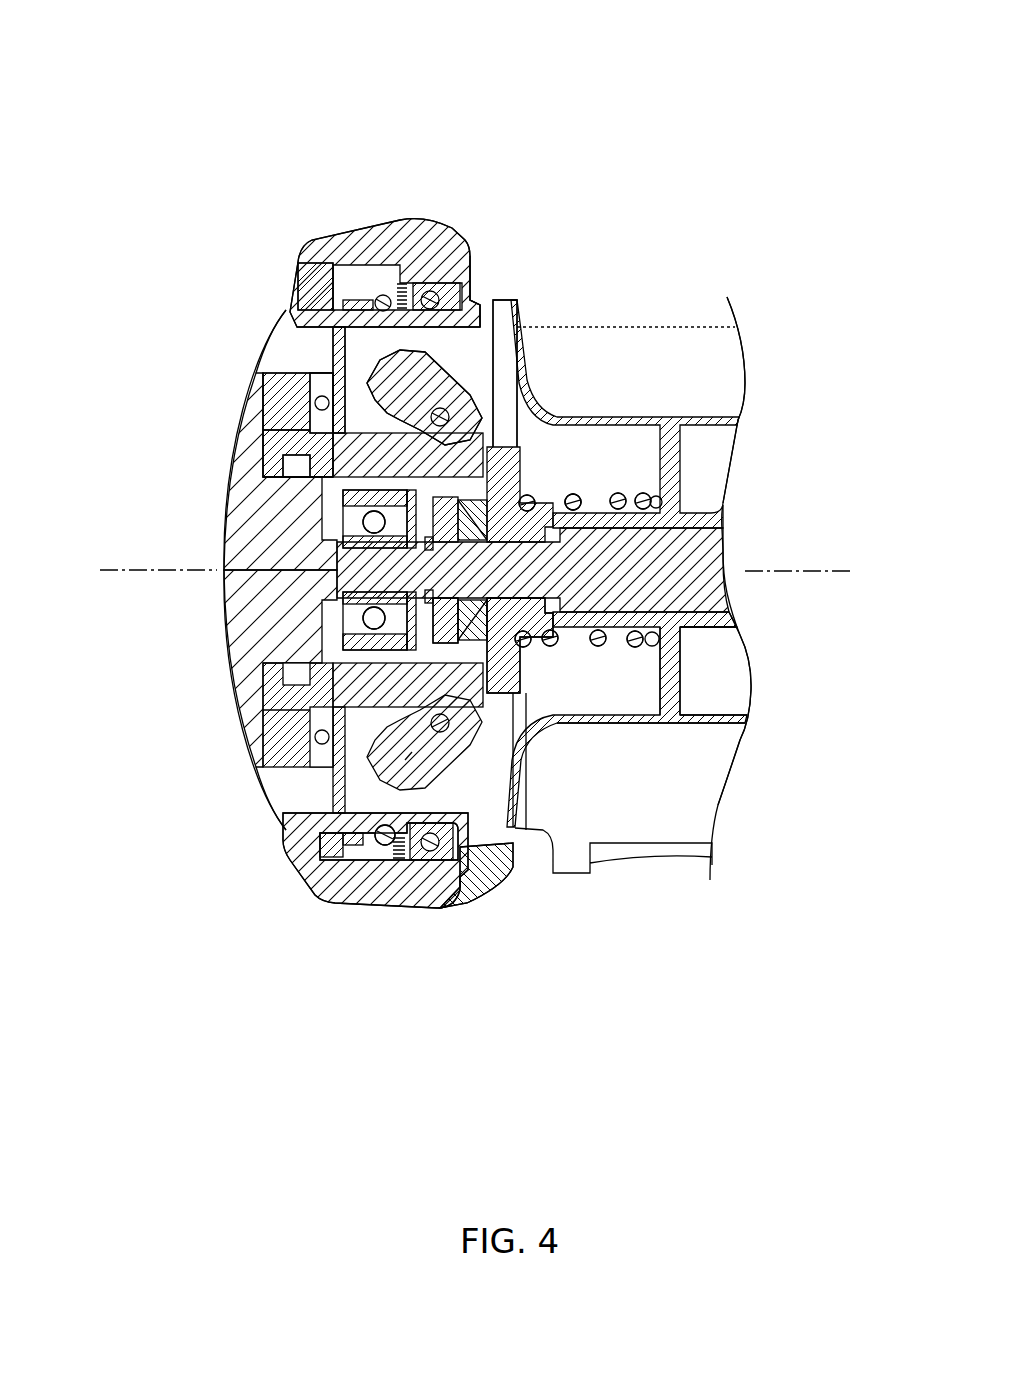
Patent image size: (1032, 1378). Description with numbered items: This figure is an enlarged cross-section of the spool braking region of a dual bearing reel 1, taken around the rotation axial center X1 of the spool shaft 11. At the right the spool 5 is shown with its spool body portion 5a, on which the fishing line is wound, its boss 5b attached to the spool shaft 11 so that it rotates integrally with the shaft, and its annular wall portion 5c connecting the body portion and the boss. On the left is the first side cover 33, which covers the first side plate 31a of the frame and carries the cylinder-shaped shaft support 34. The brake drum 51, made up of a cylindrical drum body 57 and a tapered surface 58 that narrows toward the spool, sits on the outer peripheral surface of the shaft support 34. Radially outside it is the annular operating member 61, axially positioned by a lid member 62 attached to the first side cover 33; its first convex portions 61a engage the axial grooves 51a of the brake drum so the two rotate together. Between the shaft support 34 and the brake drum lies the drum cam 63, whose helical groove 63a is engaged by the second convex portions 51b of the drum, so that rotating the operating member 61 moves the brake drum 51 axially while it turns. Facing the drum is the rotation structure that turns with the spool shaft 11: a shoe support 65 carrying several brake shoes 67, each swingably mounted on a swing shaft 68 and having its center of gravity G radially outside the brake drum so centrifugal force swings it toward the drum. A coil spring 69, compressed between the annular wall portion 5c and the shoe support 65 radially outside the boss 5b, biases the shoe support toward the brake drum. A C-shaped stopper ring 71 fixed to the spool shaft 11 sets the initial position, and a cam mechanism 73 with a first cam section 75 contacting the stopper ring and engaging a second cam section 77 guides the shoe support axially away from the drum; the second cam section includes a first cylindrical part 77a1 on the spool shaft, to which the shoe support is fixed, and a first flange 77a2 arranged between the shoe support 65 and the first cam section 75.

The dual bearing reel 1 is at (710, 79).
The rotation axial center X1 is at (476, 572).
The spool 5 is at (835, 633).
The spool body portion 5a is at (643, 743).
The boss 5b is at (722, 620).
The annular wall portion 5c is at (685, 677).
The spool shaft 11 is at (710, 510).
The first side plate 31a is at (530, 298).
The first side cover 33 is at (203, 698).
The shaft support 34 is at (285, 868).
The brake drum 51 is at (503, 960).
The grooves 51a is at (283, 308).
The second convex portions 51b is at (392, 330).
The drum body 57 is at (380, 800).
The tapered surface 58 is at (473, 880).
The operating member 61 is at (298, 372).
The first convex portions 61a is at (310, 432).
The lid member 62 is at (330, 300).
The drum cam 63 is at (300, 480).
The helical groove 63a is at (280, 445).
The shoe support 65 is at (527, 715).
The brake shoes 67 is at (445, 350).
The swing shaft 68 is at (476, 290).
The coil spring 69 is at (636, 690).
The stopper ring 71 is at (365, 620).
The cam mechanism 73 is at (660, 975).
The first cam section 75 is at (545, 660).
The second cam section 77 is at (730, 222).
The first cylindrical part 77a1 is at (552, 508).
The first flange 77a2 is at (590, 494).
The center of gravity G is at (410, 755).